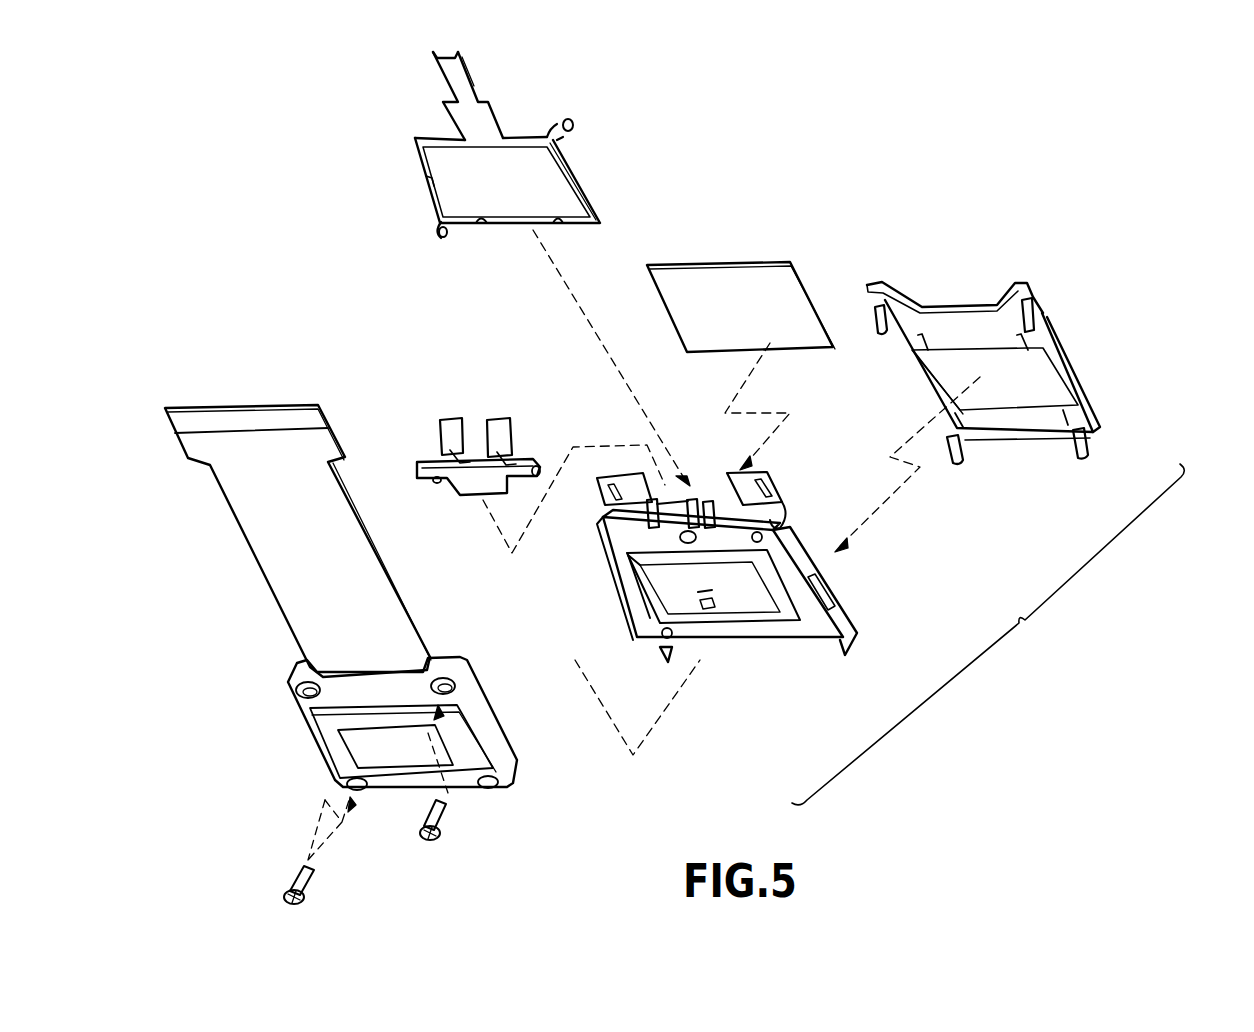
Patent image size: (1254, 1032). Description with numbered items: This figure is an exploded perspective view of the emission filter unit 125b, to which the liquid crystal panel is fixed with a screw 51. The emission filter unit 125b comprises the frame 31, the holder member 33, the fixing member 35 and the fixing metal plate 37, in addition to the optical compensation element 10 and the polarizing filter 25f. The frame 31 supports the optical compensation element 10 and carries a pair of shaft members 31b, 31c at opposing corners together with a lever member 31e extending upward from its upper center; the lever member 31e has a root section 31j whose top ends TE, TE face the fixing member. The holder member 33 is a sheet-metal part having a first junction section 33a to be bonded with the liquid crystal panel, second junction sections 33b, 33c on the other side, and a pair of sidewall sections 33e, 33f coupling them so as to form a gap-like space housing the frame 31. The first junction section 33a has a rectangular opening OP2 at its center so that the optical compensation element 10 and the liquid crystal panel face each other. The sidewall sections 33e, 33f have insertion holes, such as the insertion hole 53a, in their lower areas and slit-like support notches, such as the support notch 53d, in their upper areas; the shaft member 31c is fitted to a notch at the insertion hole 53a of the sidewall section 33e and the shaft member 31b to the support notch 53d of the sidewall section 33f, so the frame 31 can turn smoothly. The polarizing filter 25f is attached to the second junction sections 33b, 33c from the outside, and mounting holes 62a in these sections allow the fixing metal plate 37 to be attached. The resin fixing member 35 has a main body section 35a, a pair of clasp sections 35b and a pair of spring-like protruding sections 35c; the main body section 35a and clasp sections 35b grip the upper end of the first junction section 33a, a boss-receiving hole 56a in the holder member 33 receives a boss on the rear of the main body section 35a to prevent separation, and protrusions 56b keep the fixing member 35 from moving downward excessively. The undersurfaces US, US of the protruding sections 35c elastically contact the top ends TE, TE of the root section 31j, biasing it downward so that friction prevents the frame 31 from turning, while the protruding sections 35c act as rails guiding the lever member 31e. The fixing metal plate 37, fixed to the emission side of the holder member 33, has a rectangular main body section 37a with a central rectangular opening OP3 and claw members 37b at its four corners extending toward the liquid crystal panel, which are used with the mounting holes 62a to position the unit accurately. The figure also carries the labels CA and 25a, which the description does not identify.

The frame 31 is at (577, 156).
The lever member 31e is at (438, 78).
The top ends TE is at (480, 92).
The root section 31j is at (480, 123).
The shaft member 31b is at (575, 120).
The shaft member 31c is at (442, 240).
The optical compensation element 10 is at (510, 188).
The polarizing filter 25f is at (715, 262).
The fixing metal plate 37 is at (1070, 353).
The main body section 37a is at (1090, 418).
The claw members 37b is at (878, 316).
The rectangular opening OP3 is at (1020, 395).
The emission filter unit 125b is at (988, 634).
The holder member 33 is at (626, 600).
The second junction section 33b is at (635, 490).
The second junction section 33c is at (775, 488).
The support notch 53d is at (788, 515).
The sidewall section 33f is at (818, 580).
The sidewall section 33e is at (605, 553).
The first junction section 33a is at (787, 640).
The insertion hole 53a is at (648, 603).
The rectangular opening OP2 is at (740, 620).
The protrusions 56b is at (672, 512).
The boss-receiving hole 56a is at (688, 544).
The mounting holes 62a is at (664, 492).
The fixing member 35 is at (442, 412).
The protruding sections 35c is at (503, 425).
The undersurfaces US is at (440, 445).
The clasp sections 35b is at (434, 484).
The main body section 35a is at (477, 494).
The cable CA is at (258, 568).
The connector 25a is at (305, 755).
The screw 51 is at (312, 882).